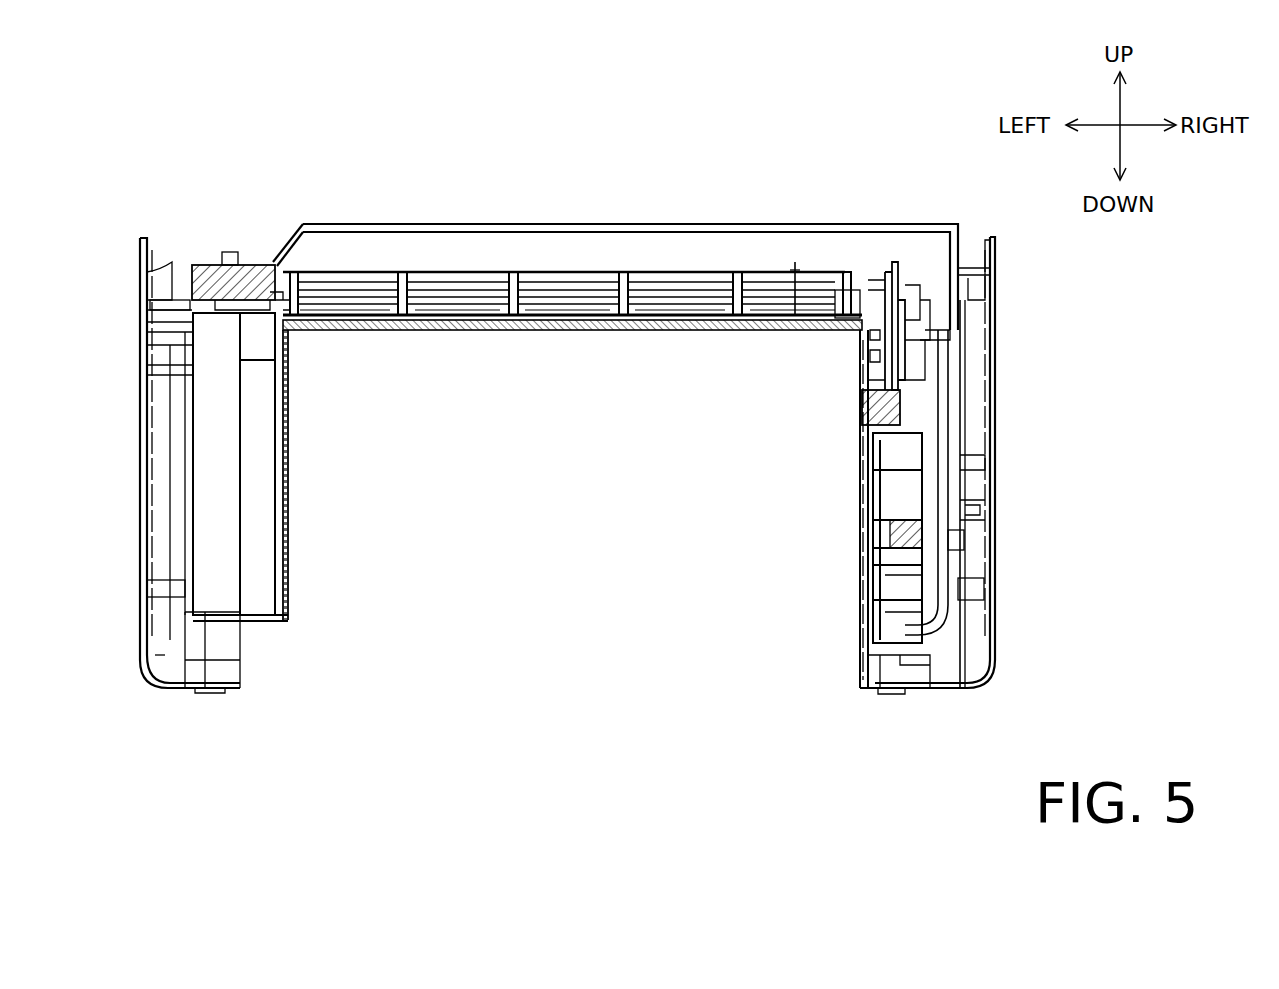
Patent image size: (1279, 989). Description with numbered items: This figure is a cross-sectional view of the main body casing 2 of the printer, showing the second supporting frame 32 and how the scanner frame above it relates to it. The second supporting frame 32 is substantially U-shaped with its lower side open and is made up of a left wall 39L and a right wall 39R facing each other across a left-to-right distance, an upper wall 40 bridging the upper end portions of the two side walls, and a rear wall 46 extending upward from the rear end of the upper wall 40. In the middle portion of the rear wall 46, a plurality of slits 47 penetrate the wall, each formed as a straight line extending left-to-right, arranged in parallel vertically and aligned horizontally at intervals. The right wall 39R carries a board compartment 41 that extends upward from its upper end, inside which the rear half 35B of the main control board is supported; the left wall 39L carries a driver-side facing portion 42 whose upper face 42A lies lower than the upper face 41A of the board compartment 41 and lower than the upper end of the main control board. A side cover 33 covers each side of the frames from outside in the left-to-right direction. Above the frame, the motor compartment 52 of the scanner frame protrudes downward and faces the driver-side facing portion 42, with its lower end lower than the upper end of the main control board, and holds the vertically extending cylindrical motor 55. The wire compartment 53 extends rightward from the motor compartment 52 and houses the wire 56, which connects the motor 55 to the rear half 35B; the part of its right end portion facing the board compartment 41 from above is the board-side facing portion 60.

The main body casing 2 is at (1000, 533).
The second supporting frame 32 is at (858, 580).
The side cover 33 is at (996, 350).
The rear half of the main control board 35B is at (960, 235).
The left wall 39L is at (286, 522).
The right wall 39R is at (858, 484).
The upper wall 40 is at (618, 333).
The board compartment 41 is at (873, 380).
The upper face of the board compartment 41A is at (883, 330).
The driver-side facing portion 42 is at (283, 345).
The upper face of the driver-side facing portion 42A is at (290, 320).
The rear wall 46 is at (562, 280).
The slit 47 is at (362, 285).
The motor compartment 52 is at (165, 298).
The wire compartment 53 is at (793, 328).
The motor 55 is at (215, 268).
The wire 56 is at (975, 290).
The board-side facing portion 60 is at (910, 345).